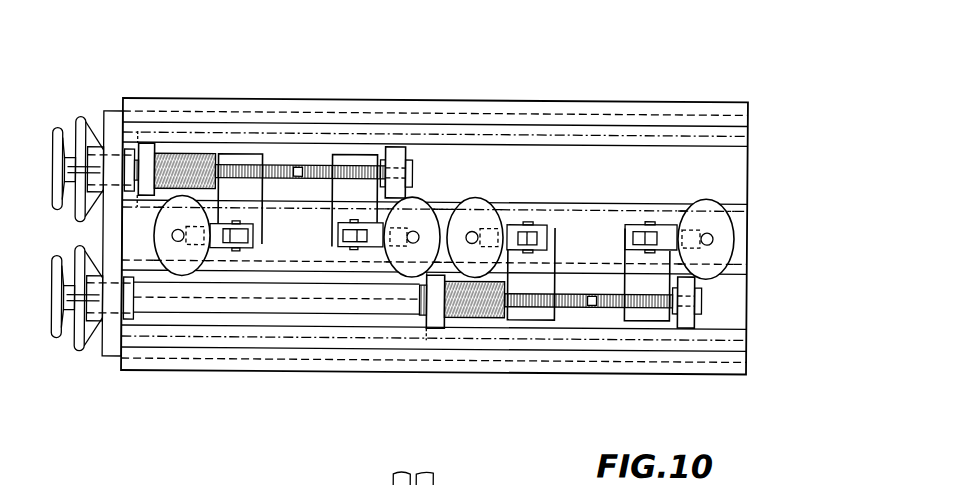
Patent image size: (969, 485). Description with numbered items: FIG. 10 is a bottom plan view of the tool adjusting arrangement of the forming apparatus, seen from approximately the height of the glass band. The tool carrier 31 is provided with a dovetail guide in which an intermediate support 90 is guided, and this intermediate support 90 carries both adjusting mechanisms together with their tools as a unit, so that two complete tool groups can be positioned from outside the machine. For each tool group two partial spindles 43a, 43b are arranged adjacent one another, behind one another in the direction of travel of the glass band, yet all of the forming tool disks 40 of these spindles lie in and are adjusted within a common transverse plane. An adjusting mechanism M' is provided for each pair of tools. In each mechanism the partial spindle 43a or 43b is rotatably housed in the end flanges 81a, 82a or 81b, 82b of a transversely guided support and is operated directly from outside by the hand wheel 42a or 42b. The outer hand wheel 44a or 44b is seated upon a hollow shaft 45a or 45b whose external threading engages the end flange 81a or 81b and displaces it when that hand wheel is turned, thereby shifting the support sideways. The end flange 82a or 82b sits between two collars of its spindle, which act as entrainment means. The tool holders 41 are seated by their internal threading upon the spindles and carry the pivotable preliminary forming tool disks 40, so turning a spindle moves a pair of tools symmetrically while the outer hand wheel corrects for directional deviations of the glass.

The tool carrier 31 is at (499, 108).
The intermediate support 90 is at (560, 137).
The hand wheel 42a is at (57, 128).
The outer hand wheel 44a is at (80, 118).
The end flange 81a is at (147, 158).
The hollow shaft 45a is at (193, 155).
The partial spindle 43a is at (300, 164).
The tool holder 41 is at (360, 160).
The end flange 82a is at (397, 147).
The hand wheel 42b is at (57, 336).
The outer hand wheel 44b is at (80, 346).
The end flange 81b is at (435, 310).
The hollow shaft 45b is at (478, 318).
The partial spindle 43b is at (588, 298).
The forming tool disk 40 is at (645, 311).
The end flange 82b is at (685, 316).
The adjusting mechanism M' is at (61, 228).